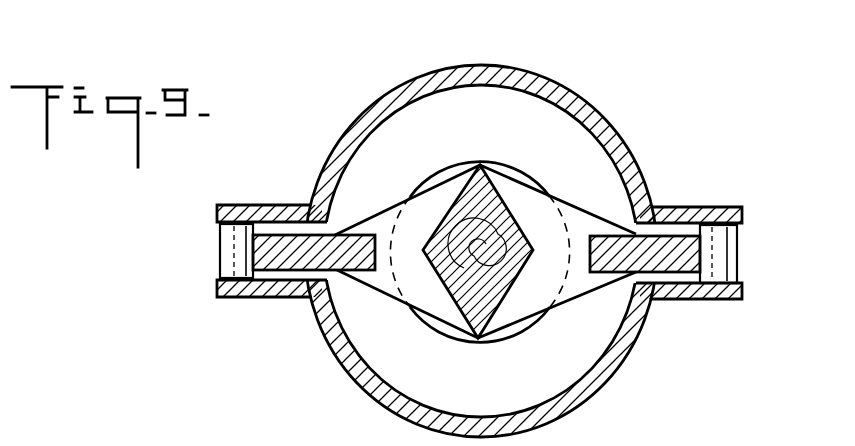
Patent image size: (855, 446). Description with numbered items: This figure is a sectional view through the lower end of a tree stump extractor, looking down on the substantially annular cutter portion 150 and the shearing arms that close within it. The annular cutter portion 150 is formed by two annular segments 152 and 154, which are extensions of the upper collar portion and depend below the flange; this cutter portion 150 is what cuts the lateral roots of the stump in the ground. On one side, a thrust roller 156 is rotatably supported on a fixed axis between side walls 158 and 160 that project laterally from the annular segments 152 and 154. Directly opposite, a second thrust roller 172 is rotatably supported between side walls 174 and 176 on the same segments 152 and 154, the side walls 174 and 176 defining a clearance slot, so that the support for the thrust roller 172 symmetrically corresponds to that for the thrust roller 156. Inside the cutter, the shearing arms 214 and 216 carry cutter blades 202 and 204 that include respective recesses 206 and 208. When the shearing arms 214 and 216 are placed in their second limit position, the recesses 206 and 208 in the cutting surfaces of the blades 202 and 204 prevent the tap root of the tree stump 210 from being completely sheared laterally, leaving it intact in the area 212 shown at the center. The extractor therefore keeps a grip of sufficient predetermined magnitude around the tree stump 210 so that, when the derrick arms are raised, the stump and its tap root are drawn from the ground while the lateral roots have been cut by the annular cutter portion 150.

The annular cutter portion 150 is at (462, 65).
The annular segment 152 is at (582, 393).
The annular segment 154 is at (543, 82).
The thrust roller 156 is at (222, 258).
The side wall 158 is at (262, 298).
The side wall 160 is at (283, 208).
The thrust roller 172 is at (737, 267).
The side wall 174 is at (692, 300).
The side wall 176 is at (685, 207).
The cutter blade 202 is at (392, 211).
The cutter blade 204 is at (552, 210).
The recess 206 is at (460, 192).
The recess 208 is at (505, 312).
The tree stump 210 is at (450, 327).
The intact tap root area 212 is at (493, 193).
The shearing arm 214 is at (295, 270).
The shearing arm 216 is at (661, 273).